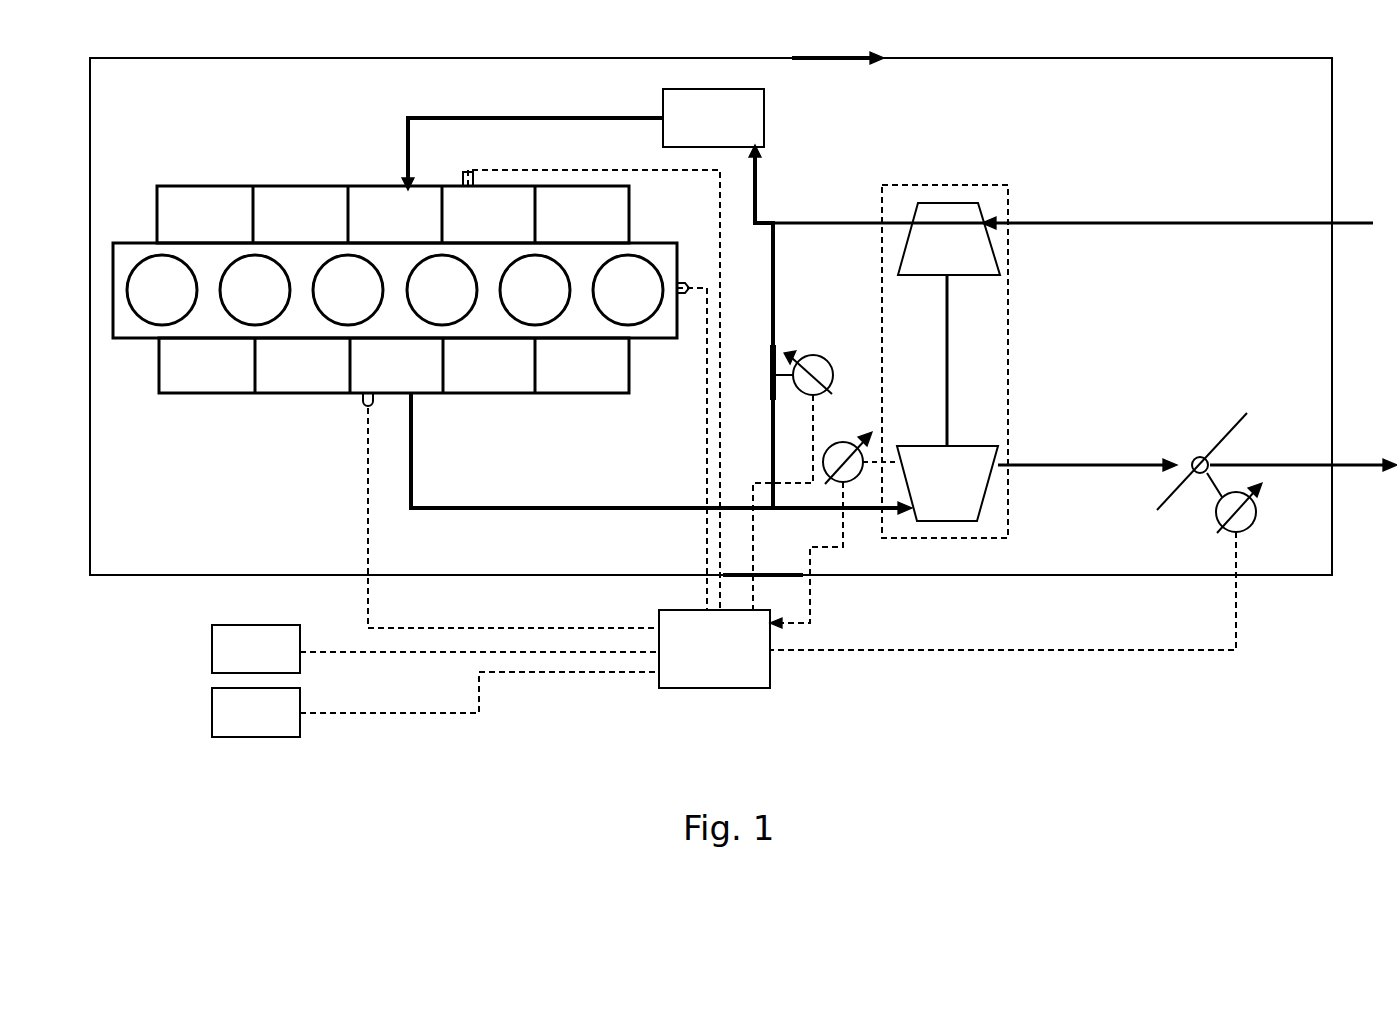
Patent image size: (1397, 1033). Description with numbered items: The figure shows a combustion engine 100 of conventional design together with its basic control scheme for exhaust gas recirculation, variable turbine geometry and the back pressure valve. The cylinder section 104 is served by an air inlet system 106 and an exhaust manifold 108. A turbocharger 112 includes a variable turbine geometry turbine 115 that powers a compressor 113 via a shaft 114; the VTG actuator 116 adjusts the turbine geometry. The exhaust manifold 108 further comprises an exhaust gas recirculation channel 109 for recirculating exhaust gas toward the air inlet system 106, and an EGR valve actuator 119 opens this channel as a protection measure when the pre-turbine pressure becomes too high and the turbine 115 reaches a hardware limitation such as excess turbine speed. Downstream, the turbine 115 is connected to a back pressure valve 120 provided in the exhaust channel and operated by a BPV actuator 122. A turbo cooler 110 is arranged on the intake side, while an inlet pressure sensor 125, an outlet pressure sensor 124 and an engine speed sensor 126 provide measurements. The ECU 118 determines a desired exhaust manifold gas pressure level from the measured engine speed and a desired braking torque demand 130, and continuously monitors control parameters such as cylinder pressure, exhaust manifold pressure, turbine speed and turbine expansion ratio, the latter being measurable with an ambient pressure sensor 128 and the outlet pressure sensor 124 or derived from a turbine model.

The combustion engine 100 is at (711, 313).
The cylinder section 104 is at (137, 290).
The air inlet system 106 is at (245, 186).
The exhaust manifold 108 is at (235, 397).
The exhaust gas recirculation (EGR) channel 109 is at (1051, 326).
The turbo cooler 110 is at (583, 139).
The turbocharger 112 is at (1010, 362).
The compressor 113 is at (963, 213).
The shaft 114 is at (948, 378).
The variable turbine geometry (VTG) turbine 115 is at (970, 493).
The VTG actuator 116 is at (833, 514).
The ECU 118 is at (714, 649).
The EGR valve actuator 119 is at (793, 467).
The back pressure valve (BPV) 120 is at (1197, 461).
The BPV actuator 122 is at (1037, 561).
The outlet pressure sensor 124 is at (489, 510).
The inlet pressure sensor 125 is at (591, 370).
The engine speed sensor 126 is at (661, 446).
The ambient pressure sensor 128 is at (435, 649).
The braking torque demand 130 is at (435, 704).